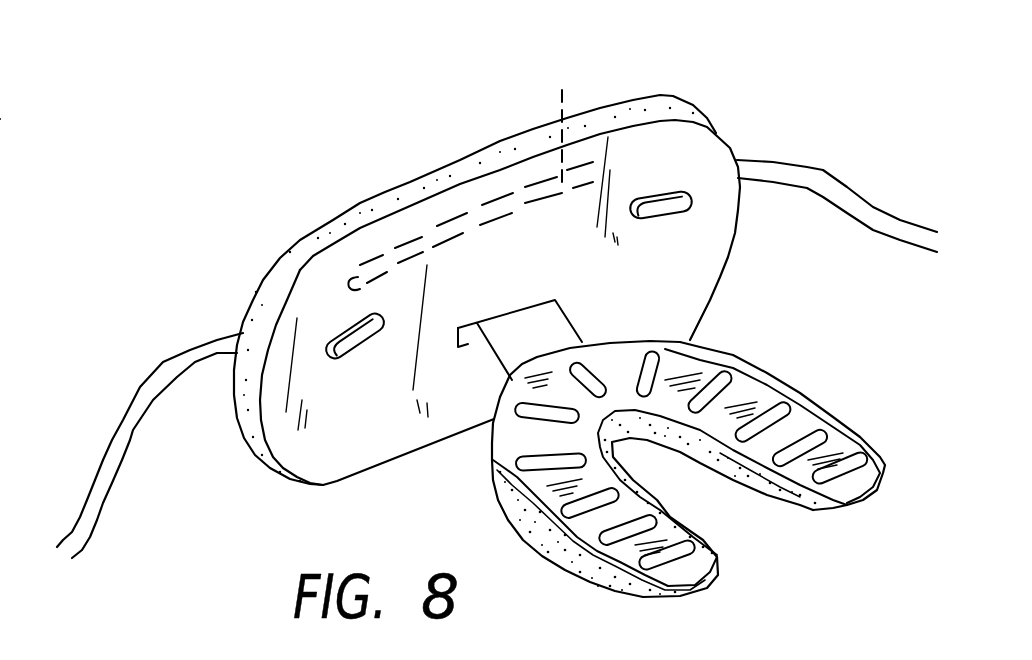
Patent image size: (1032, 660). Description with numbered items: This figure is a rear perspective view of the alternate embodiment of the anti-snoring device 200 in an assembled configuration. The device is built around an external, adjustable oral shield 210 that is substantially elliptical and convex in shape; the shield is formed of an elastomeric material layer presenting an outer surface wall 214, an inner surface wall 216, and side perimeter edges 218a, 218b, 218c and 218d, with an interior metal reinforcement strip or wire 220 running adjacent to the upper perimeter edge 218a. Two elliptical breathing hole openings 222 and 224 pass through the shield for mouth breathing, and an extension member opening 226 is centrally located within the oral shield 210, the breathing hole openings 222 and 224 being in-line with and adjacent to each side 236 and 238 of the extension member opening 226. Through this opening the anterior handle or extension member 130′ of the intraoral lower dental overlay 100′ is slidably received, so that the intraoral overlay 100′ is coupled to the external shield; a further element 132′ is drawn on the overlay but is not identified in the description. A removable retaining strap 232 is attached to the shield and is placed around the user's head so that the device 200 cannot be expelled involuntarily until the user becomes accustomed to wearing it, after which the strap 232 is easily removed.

The anti-snoring device 200 is at (295, 195).
The oral shield 210 is at (335, 212).
The outer surface wall 214 is at (293, 250).
The inner surface wall 216 is at (680, 143).
The upper perimeter edge 218a is at (447, 170).
The side perimeter edge 218b is at (447, 440).
The side perimeter edge 218c is at (735, 237).
The side perimeter edge 218d is at (252, 396).
The interior metal reinforcement strip or wire 220 is at (568, 76).
The breathing hole opening 222 is at (657, 197).
The breathing hole opening 224 is at (360, 333).
The extension member opening 226 is at (531, 310).
The removable retaining strap 232 is at (800, 180).
The side of extension member opening 236 is at (548, 300).
The side of extension member opening 238 is at (461, 340).
The tether 132′ is at (506, 332).
The anterior handle 130′ is at (546, 338).
The intraoral lower dental overlay 100′ is at (672, 577).